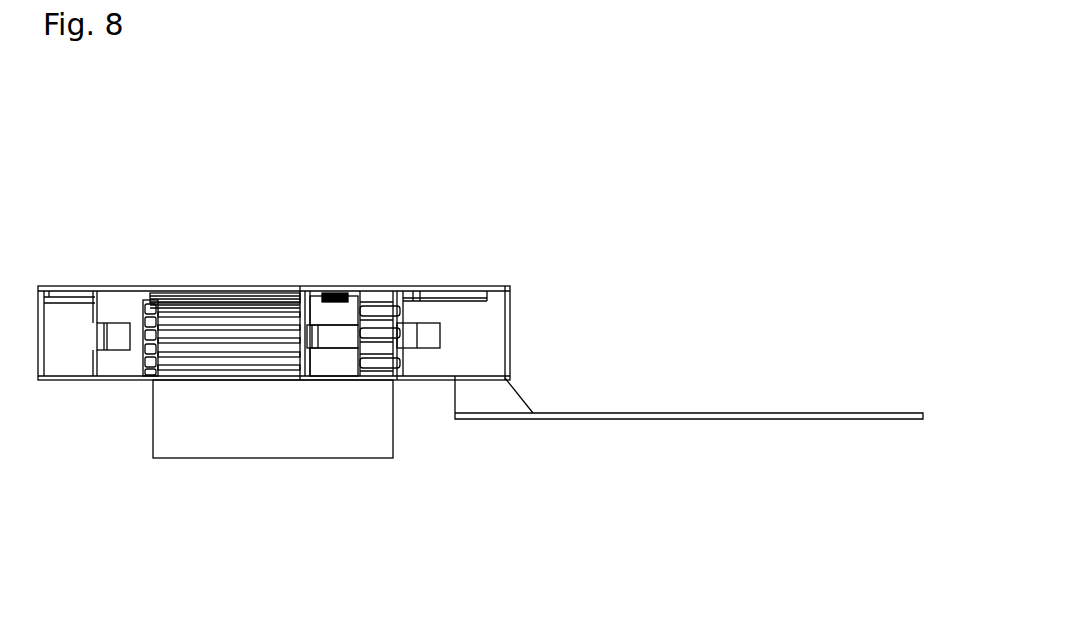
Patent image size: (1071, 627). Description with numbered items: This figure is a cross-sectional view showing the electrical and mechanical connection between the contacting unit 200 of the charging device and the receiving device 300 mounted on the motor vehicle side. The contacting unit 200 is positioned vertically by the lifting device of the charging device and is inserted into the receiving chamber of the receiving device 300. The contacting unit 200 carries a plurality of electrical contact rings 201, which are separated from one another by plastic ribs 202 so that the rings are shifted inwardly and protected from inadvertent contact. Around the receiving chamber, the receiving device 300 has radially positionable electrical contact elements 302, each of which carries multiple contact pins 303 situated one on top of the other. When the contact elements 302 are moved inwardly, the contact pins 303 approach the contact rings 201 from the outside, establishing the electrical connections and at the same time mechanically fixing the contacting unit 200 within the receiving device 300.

The electrical contacting unit 200 is at (262, 425).
The electrical contact rings 201 is at (200, 322).
The plastic ribs 202 is at (237, 313).
The receiving device 300 is at (488, 315).
The electrical contact elements 302 is at (120, 367).
The contact pins 303 is at (150, 312).